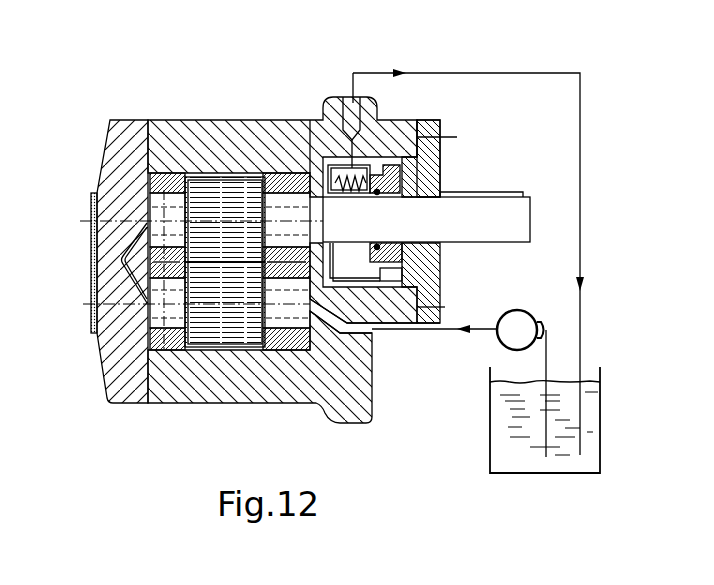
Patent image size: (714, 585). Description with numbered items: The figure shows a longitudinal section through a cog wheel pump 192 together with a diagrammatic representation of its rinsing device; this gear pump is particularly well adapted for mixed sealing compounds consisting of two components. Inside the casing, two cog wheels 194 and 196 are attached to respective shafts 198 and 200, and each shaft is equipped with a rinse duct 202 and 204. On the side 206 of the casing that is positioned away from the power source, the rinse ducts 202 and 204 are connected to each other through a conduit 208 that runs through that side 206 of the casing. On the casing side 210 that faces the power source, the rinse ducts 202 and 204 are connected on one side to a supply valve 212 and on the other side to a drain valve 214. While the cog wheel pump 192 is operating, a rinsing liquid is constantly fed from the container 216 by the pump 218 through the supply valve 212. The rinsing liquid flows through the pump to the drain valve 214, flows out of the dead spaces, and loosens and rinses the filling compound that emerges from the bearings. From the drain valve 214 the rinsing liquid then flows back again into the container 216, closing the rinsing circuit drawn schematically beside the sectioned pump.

The cog wheel pump 192 is at (134, 94).
The cog wheel 194 is at (228, 330).
The cog wheel 196 is at (224, 190).
The shaft 198 is at (290, 317).
The shaft 200 is at (500, 203).
The rinse duct 202 is at (164, 350).
The rinse duct 204 is at (166, 190).
The side of the casing 206 is at (92, 240).
The conduit 208 is at (137, 311).
The casing side 210 is at (405, 305).
The supply valve 212 is at (371, 335).
The drain valve 214 is at (348, 102).
The container 216 is at (500, 452).
The pump 218 is at (516, 320).